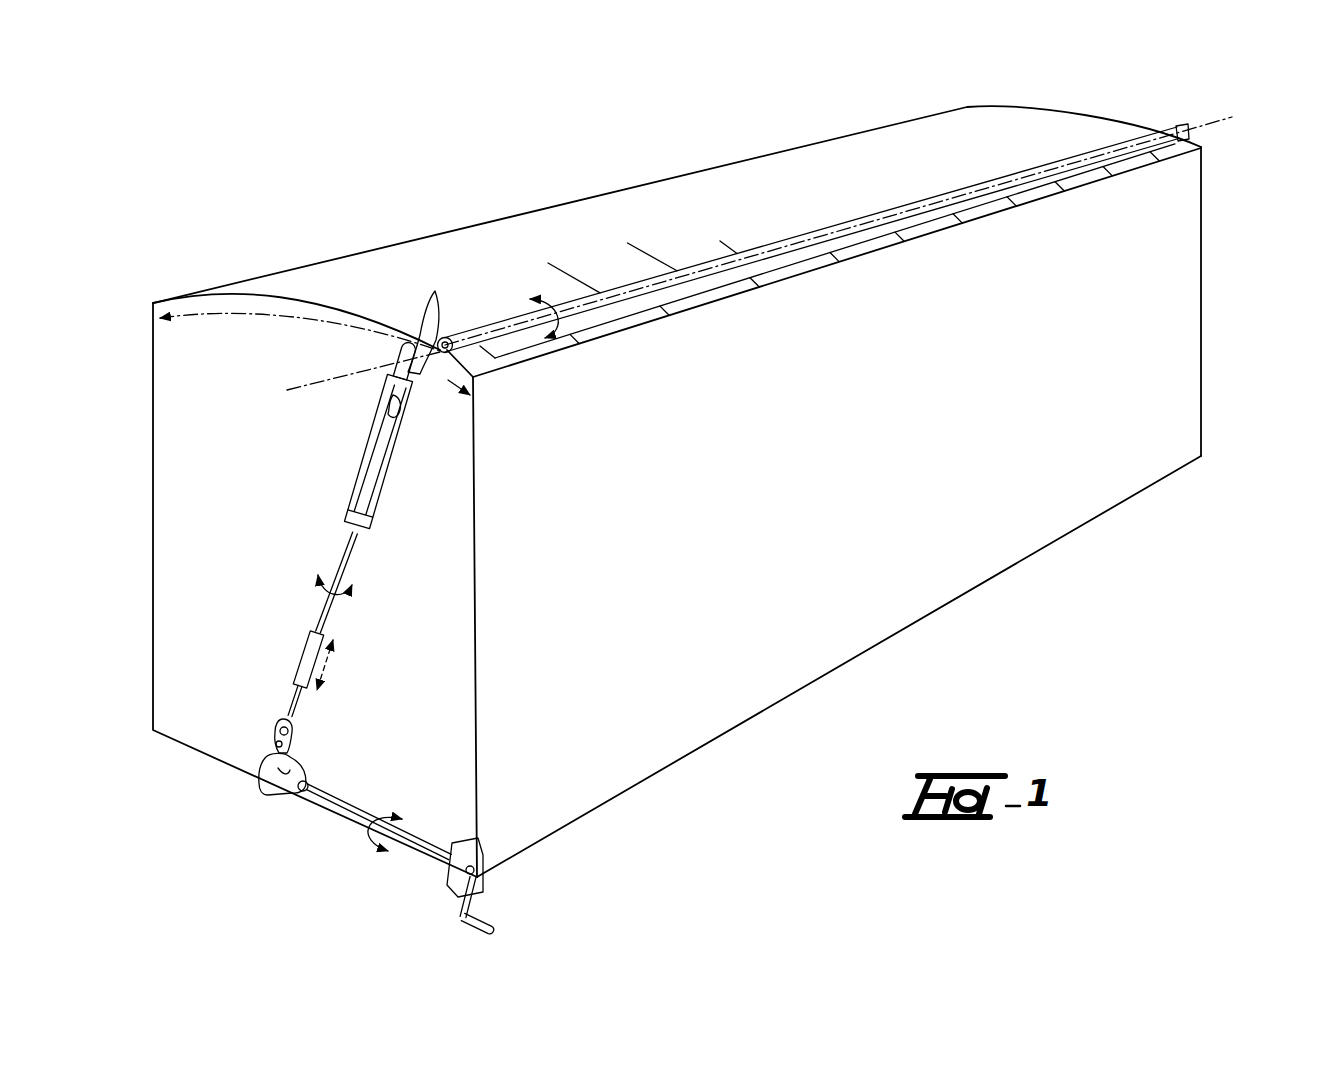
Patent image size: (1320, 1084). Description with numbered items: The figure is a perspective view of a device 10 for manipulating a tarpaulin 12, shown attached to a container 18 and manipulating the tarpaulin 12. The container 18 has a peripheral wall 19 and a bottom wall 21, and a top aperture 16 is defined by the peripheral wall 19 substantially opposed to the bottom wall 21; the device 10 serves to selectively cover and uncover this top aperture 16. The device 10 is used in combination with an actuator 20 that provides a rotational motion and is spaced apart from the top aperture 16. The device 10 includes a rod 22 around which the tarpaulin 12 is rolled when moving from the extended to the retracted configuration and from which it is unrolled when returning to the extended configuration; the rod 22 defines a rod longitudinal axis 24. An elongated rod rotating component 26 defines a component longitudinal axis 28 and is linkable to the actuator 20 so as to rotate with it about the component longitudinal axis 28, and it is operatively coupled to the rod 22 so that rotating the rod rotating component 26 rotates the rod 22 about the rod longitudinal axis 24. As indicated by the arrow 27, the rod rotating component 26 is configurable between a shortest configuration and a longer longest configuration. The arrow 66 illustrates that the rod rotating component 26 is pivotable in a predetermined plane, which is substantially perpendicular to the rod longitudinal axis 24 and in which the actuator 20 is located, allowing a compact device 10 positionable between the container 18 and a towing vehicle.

The device 10 is at (293, 493).
The tarpaulin 12 is at (780, 158).
The top aperture 16 is at (920, 224).
The container 18 is at (770, 712).
The peripheral wall 19 is at (1185, 262).
The actuator 20 is at (337, 813).
The bottom wall 21 is at (1073, 530).
The rod 22 is at (517, 317).
The rod longitudinal axis 24 is at (360, 367).
The rod rotating component 26 is at (353, 557).
The arrow 27 is at (368, 677).
The component longitudinal axis 28 is at (420, 347).
The arrow 66 is at (212, 308).